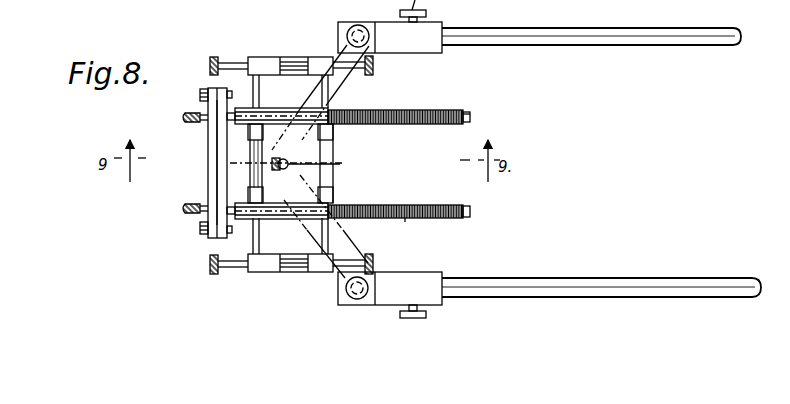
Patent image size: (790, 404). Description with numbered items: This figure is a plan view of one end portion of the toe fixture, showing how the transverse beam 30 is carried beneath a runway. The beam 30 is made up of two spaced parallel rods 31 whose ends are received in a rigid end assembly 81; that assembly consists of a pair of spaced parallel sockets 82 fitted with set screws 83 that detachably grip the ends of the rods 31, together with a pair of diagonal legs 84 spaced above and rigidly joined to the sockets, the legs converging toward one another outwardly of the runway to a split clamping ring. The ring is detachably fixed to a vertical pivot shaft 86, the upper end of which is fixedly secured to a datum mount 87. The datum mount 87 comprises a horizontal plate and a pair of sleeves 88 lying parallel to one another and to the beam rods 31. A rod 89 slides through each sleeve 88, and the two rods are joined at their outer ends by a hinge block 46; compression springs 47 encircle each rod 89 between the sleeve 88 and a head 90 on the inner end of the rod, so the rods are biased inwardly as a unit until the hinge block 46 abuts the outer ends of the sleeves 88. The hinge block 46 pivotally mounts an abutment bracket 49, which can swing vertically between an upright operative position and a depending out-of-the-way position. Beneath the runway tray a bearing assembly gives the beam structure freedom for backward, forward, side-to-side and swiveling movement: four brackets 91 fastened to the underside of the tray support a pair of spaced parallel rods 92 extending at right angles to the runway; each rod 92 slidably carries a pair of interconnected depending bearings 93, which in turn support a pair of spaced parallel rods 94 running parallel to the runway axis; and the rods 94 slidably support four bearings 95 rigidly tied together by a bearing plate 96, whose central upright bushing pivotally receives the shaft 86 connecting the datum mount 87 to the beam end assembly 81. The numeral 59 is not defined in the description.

The transverse beam 30 is at (672, 53).
The rods 31 is at (584, 44).
The hinge block 46 is at (225, 160).
The compression springs 47 is at (416, 124).
The abutment bracket 49 is at (214, 190).
The nut 59 is at (466, 114).
The end assemblies 81 is at (335, 298).
The sockets 82 is at (432, 50).
The set screws 83 is at (414, 318).
The diagonal legs 84 is at (342, 96).
The pivot shaft 86 is at (320, 164).
The datum mount 87 is at (272, 140).
The sleeves 88 is at (282, 118).
The rod 89 is at (408, 222).
The head 90 is at (470, 118).
The brackets 91 is at (219, 56).
The rods 92 is at (232, 62).
The bearings 93 is at (318, 62).
The rods 94 is at (260, 84).
The bearings 95 is at (248, 130).
The bearing plate 96 is at (262, 218).